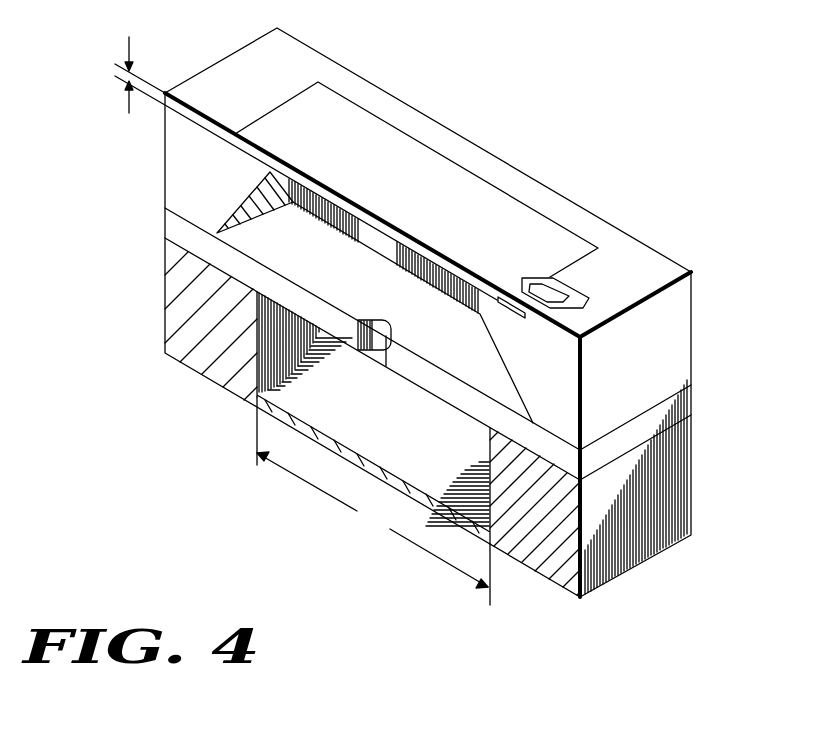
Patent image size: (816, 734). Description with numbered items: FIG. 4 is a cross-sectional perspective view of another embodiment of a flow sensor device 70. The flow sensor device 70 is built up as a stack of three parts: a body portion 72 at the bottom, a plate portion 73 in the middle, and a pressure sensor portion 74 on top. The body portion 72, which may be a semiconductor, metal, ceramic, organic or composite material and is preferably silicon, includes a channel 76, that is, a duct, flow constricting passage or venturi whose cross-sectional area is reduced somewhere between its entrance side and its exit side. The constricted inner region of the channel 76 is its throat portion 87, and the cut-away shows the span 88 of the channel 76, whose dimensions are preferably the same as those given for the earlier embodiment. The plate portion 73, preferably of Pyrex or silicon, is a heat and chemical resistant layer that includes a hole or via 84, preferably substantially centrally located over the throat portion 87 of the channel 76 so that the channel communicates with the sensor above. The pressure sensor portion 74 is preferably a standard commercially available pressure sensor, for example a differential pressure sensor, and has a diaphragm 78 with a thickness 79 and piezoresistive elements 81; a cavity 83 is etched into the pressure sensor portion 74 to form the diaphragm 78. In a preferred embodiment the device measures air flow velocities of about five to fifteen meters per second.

The flow sensor device 70 is at (213, 520).
The body portion 72 is at (672, 502).
The plate portion 73 is at (672, 412).
The pressure sensor portion 74 is at (670, 346).
The channel 76 is at (417, 427).
The diaphragm 78 is at (381, 227).
The thickness 79 is at (306, 152).
The piezoresistive elements 81 is at (519, 289).
The cavity 83 is at (308, 243).
The via 84 is at (380, 327).
The throat portion 87 is at (257, 335).
The span 88 is at (373, 501).